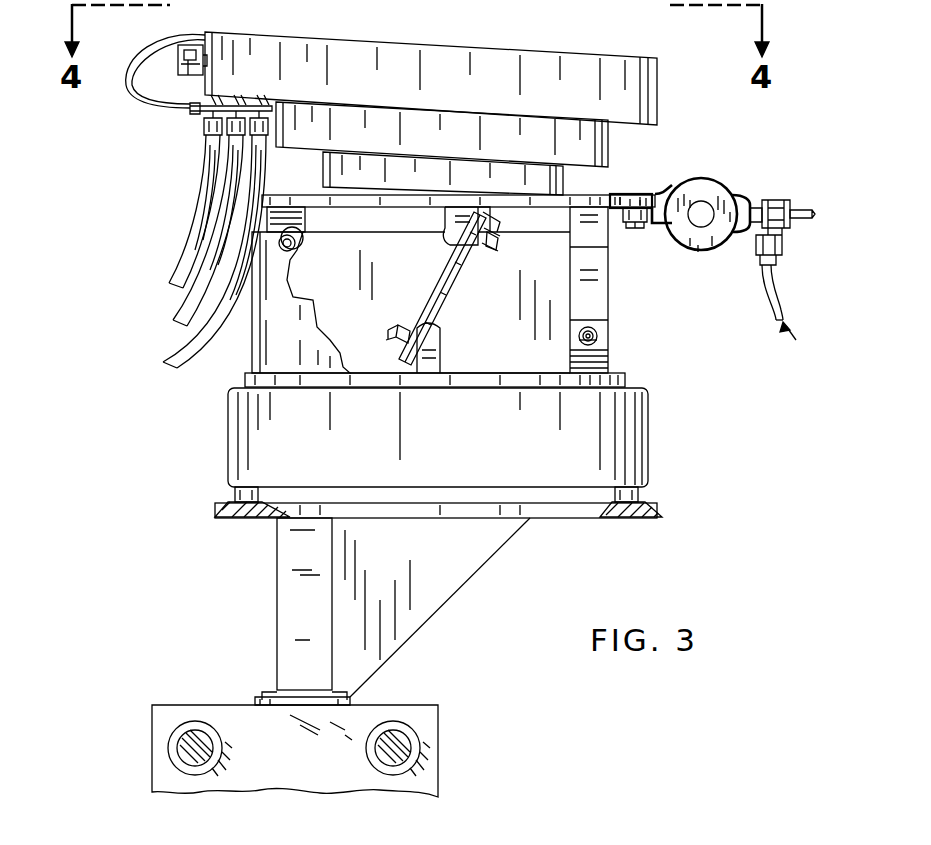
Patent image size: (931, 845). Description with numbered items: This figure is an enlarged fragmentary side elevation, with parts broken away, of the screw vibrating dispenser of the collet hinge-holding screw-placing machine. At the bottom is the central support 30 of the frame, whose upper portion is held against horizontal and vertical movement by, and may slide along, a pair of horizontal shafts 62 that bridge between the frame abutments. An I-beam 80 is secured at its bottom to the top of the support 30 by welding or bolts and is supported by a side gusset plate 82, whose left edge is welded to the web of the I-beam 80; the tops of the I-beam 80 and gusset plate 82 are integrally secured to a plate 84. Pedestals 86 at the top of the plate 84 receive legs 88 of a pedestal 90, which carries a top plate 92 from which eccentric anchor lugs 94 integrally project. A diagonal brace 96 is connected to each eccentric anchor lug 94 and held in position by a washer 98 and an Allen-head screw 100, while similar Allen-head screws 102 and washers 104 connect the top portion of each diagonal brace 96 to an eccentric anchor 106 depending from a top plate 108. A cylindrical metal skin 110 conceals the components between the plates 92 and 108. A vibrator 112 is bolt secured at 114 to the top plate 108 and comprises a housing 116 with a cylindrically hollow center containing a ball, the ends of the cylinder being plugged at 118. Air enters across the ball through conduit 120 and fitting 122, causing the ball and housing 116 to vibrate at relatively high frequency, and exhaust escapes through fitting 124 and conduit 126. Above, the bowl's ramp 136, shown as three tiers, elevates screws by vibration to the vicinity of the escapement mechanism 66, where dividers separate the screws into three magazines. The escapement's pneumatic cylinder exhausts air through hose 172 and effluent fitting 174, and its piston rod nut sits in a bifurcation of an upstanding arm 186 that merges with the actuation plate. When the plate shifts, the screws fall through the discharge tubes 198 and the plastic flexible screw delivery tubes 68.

The central support 30 is at (311, 763).
The horizontal shafts 62 is at (195, 745).
The escapement mechanism 66 is at (178, 172).
The plastic flexible screw delivery tubes 68 is at (240, 272).
The I-beam 80 is at (317, 611).
The side gusset plate 82 is at (404, 583).
The plate 84 is at (569, 512).
The pedestals 86 is at (230, 503).
The legs 88 is at (250, 486).
The pedestal 90 is at (477, 450).
The top plate 92 is at (614, 380).
The eccentric anchor lugs 94 is at (608, 327).
The diagonal brace 96 is at (451, 292).
The washer 98 is at (413, 327).
The Allen-head screw 100 is at (390, 333).
The Allen-head screws 102 is at (495, 252).
The washers 104 is at (492, 222).
The eccentric anchor 106 is at (453, 233).
The top plate 108 is at (592, 195).
The cylindrical metal skin 110 is at (300, 361).
The vibrator 112 is at (730, 178).
The bolt 114 is at (637, 228).
The housing 116 is at (697, 250).
The plugs 118 is at (702, 212).
The conduit 120 is at (770, 289).
The fitting 122 is at (758, 246).
The fitting 124 is at (767, 200).
The conduit 126 is at (804, 218).
The ramp 136 is at (378, 104).
The hose 172 is at (168, 38).
The effluent fitting 174 is at (212, 126).
The upstanding arm 186 is at (188, 70).
The discharge tube 198 is at (238, 108).